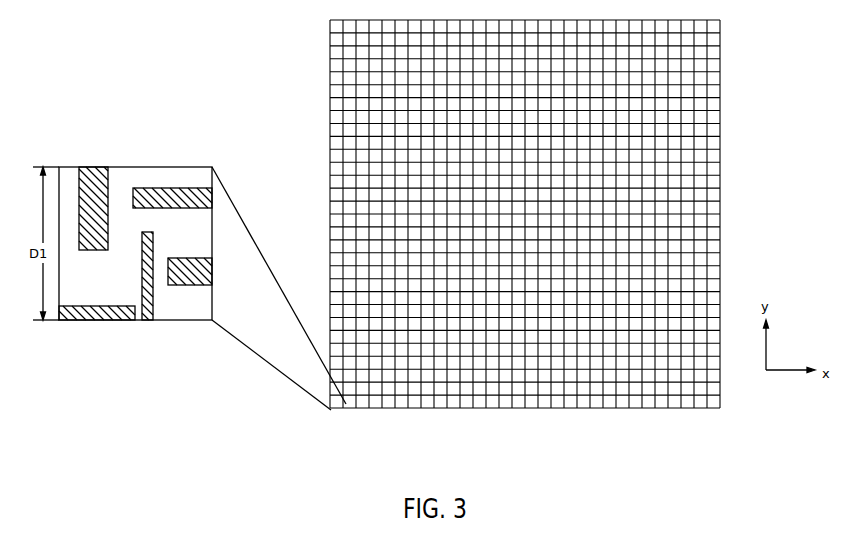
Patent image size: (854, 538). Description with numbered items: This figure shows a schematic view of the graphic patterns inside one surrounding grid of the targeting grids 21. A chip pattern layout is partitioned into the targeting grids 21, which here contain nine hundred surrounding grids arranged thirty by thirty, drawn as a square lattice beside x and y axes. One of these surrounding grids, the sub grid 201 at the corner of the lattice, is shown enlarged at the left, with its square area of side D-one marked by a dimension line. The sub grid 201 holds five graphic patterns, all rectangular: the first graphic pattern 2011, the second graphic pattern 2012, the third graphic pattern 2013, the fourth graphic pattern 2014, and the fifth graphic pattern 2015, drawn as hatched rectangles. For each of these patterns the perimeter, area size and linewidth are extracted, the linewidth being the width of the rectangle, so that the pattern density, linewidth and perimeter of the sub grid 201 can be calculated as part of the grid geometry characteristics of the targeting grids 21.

The targeting grids 21 is at (726, 167).
The sub grid 201 is at (343, 409).
The first graphic pattern 2011 is at (114, 181).
The second graphic pattern 2012 is at (174, 182).
The third graphic pattern 2013 is at (91, 328).
The fourth graphic pattern 2014 is at (154, 310).
The fifth graphic pattern 2015 is at (193, 296).